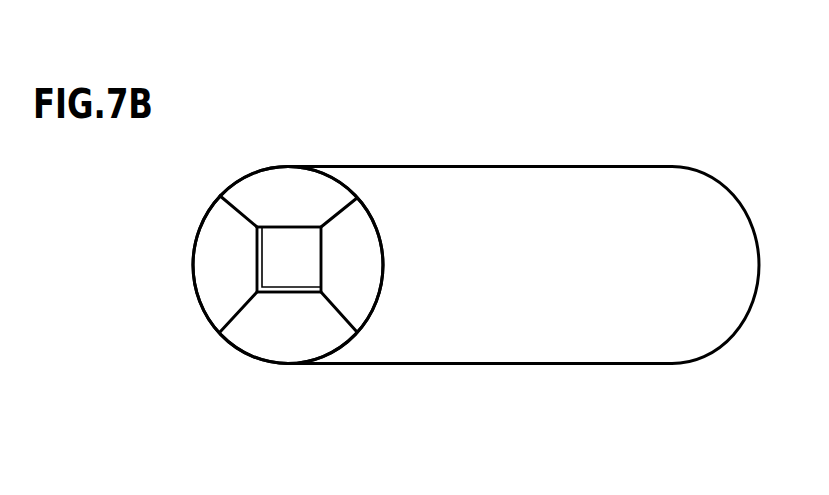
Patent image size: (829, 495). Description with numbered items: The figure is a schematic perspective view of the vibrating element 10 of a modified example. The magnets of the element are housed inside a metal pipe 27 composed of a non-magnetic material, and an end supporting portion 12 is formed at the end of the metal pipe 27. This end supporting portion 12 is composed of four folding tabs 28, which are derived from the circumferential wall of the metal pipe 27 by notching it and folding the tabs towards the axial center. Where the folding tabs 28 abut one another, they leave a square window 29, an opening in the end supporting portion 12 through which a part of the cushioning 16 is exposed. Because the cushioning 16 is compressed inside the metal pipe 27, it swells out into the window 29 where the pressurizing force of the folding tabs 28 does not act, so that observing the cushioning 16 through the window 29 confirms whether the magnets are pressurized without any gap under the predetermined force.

The vibrating element 10 is at (467, 92).
The metal pipe 27 is at (552, 193).
The end supporting portion 12 is at (202, 257).
The folding tabs 28 is at (265, 350).
The window 29 is at (297, 258).
The cushioning 16 is at (289, 259).